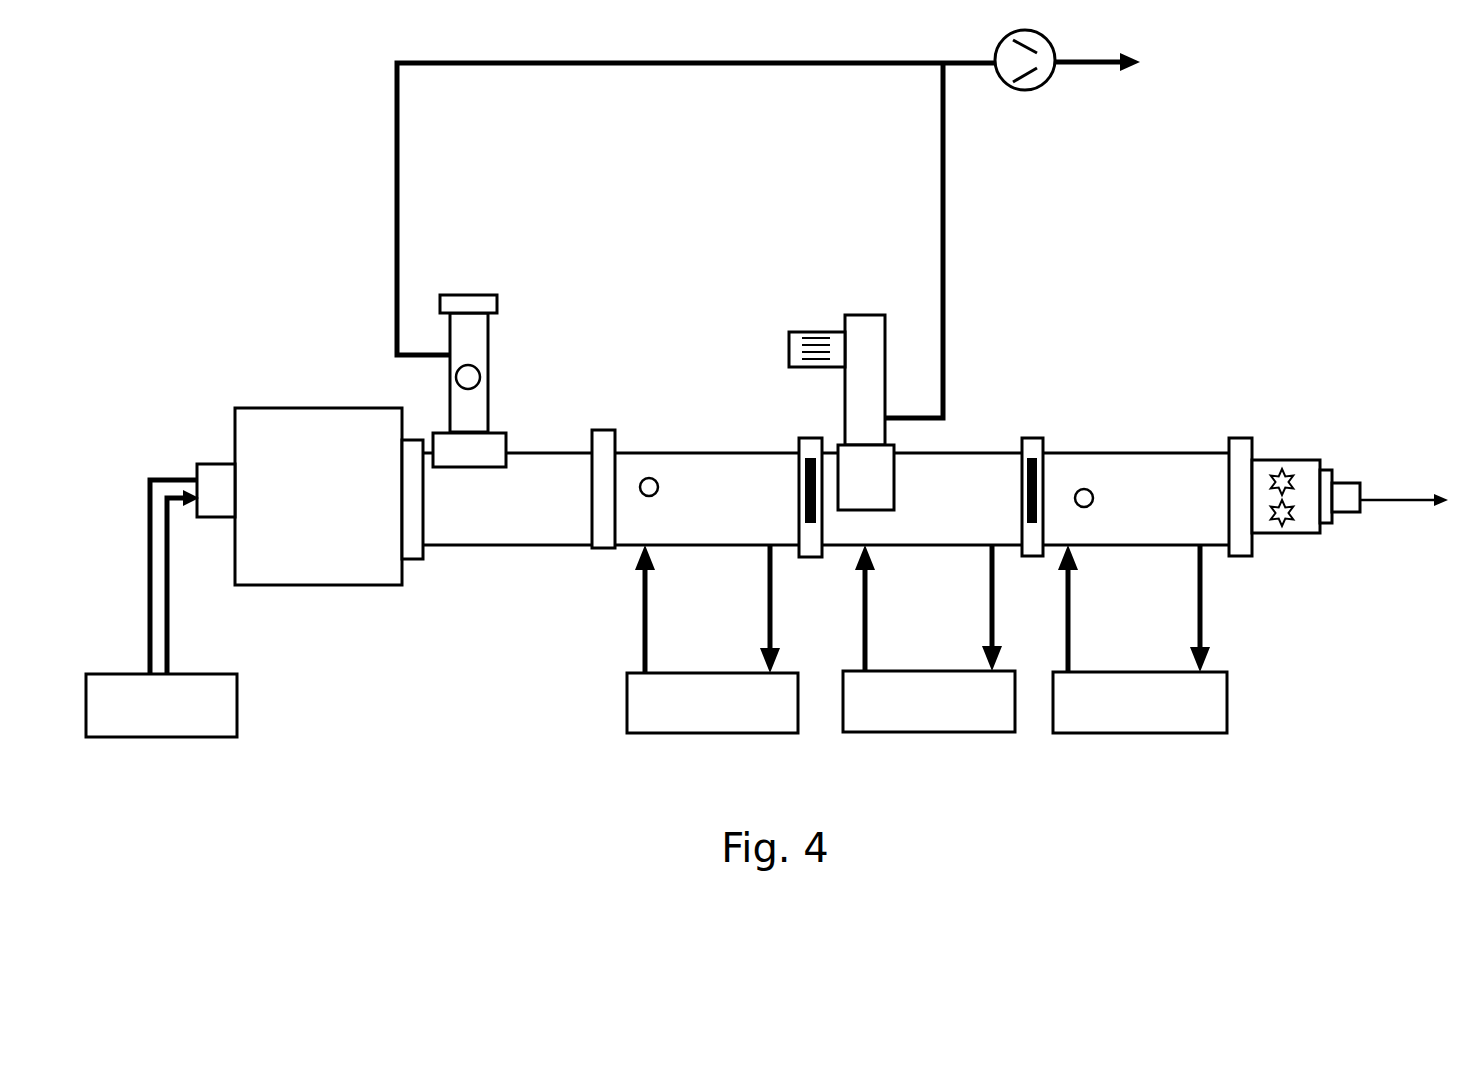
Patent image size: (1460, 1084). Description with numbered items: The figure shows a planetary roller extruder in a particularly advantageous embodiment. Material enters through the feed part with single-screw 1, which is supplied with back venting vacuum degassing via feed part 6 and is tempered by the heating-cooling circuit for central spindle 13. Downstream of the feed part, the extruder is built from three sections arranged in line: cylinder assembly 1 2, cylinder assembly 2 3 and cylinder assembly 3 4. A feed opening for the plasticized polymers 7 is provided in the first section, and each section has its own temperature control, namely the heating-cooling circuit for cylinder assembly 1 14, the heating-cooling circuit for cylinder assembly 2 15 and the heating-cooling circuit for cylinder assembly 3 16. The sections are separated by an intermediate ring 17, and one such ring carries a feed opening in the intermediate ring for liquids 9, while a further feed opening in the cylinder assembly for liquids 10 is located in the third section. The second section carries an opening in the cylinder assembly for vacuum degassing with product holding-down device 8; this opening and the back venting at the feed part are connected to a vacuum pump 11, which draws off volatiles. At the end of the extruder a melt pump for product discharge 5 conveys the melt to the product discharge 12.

The feed part with single-screw 1 is at (507, 499).
The cylinder assembly 1 2 is at (707, 499).
The cylinder assembly 2 3 is at (922, 499).
The cylinder assembly 3 4 is at (1136, 499).
The melt pump for product discharge 5 is at (1300, 448).
The back venting vacuum degassing via feed part 6 is at (495, 330).
The feed opening for the plasticized polymers 7 is at (649, 478).
The opening in the cylinder assembly for vacuum degassing with product holding-down 8 is at (862, 465).
The feed opening in the intermediate ring for liquids 9 is at (1033, 448).
The feed opening in the cylinder assembly for liquids 10 is at (1084, 489).
The vacuum pump 11 is at (1053, 87).
The product discharge 12 is at (1387, 505).
The heating-cooling circuit for central spindle 13 is at (161, 705).
The heating-cooling circuit for cylinder assembly 1 14 is at (712, 639).
The heating-cooling circuit for cylinder assembly 2 15 is at (929, 638).
The heating-cooling circuit for cylinder assembly 3 16 is at (1140, 639).
The intermediate ring 17 is at (805, 493).